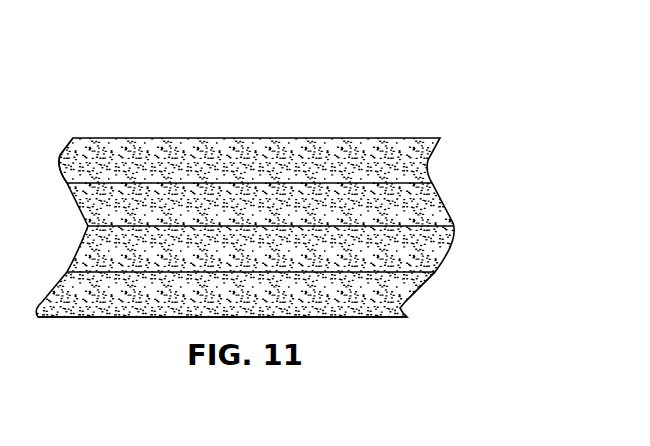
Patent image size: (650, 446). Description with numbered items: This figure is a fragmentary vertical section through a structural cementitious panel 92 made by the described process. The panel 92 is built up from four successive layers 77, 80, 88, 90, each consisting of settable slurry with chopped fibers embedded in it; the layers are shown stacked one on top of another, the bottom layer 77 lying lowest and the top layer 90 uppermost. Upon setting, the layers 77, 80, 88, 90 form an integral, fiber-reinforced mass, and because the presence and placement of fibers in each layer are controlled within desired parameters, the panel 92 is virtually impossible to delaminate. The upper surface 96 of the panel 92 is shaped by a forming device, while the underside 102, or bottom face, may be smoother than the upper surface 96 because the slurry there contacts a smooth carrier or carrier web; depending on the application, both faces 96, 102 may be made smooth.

The SCP panel 92 is at (253, 125).
The upper surface 96 is at (115, 138).
The layer 90 is at (418, 160).
The layer 88 is at (430, 210).
The layer 80 is at (436, 248).
The layer 77 is at (397, 295).
The underside 102 is at (370, 318).